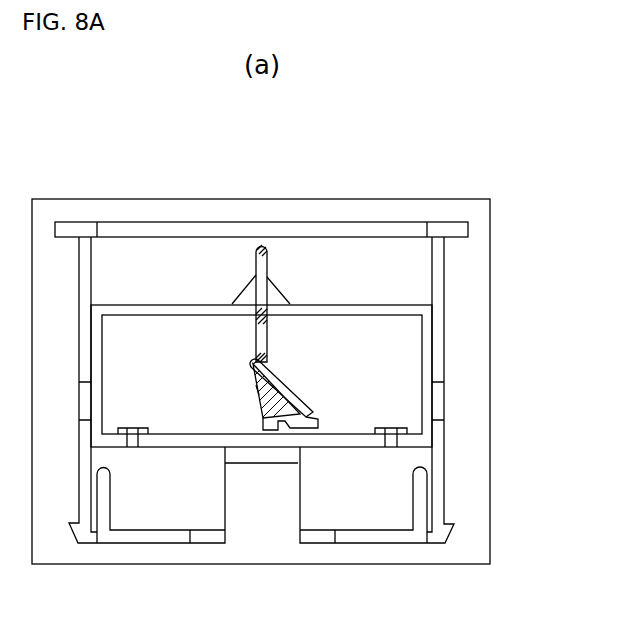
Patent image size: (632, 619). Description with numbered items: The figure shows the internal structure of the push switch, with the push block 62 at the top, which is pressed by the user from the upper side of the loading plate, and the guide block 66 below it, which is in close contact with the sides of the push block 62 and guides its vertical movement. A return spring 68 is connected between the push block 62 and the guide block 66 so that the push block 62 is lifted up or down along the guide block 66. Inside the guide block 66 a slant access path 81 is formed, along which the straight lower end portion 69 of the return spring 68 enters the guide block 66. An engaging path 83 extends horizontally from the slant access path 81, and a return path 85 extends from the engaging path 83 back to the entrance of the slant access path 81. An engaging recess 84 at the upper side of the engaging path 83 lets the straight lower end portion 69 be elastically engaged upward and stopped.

The push block 62 is at (368, 230).
The guide block 66 is at (402, 313).
The return spring 68 is at (263, 268).
The straight lower end portion 69 is at (253, 364).
The slant access path 81 is at (277, 373).
The engaging path 83 is at (274, 430).
The engaging recess 84 is at (298, 408).
The return path 85 is at (255, 394).